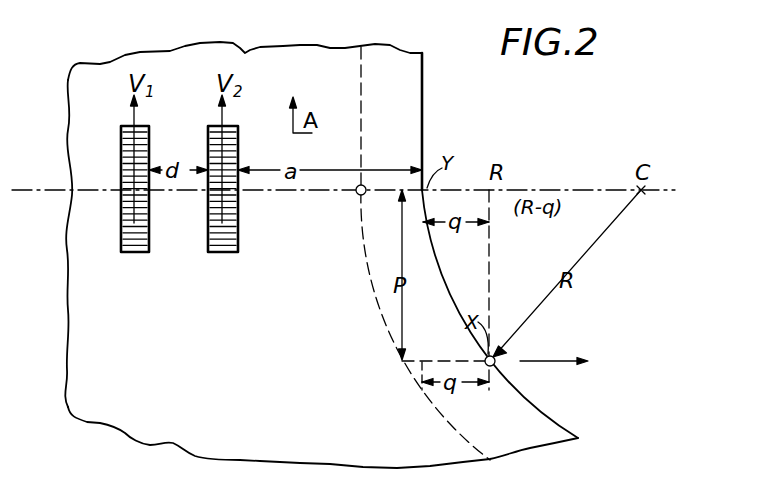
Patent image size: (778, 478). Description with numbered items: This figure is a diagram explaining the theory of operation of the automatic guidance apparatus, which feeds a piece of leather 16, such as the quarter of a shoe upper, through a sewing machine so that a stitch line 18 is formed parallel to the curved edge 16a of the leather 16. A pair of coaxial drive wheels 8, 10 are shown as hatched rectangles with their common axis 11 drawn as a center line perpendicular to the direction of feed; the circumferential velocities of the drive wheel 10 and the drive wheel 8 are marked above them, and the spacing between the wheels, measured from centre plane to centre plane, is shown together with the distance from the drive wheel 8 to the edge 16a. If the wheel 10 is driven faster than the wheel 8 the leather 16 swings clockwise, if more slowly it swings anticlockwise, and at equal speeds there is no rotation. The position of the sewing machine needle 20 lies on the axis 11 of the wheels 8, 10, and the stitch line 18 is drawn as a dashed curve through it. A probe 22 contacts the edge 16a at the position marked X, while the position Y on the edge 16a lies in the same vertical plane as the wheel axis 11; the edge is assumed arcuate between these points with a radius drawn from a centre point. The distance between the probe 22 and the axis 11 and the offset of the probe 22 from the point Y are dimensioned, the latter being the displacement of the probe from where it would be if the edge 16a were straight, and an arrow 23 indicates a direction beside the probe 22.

The drive wheel 8 is at (221, 254).
The drive wheel 10 is at (133, 254).
The axis of the wheels 11 is at (41, 190).
The leather 16 is at (246, 54).
The edge of the piece of leather 16a is at (425, 81).
The stitch line 18 is at (362, 257).
The position of the sewing machine needle 20 is at (358, 193).
The probe 22 is at (495, 365).
The direction arrow 23 is at (552, 361).